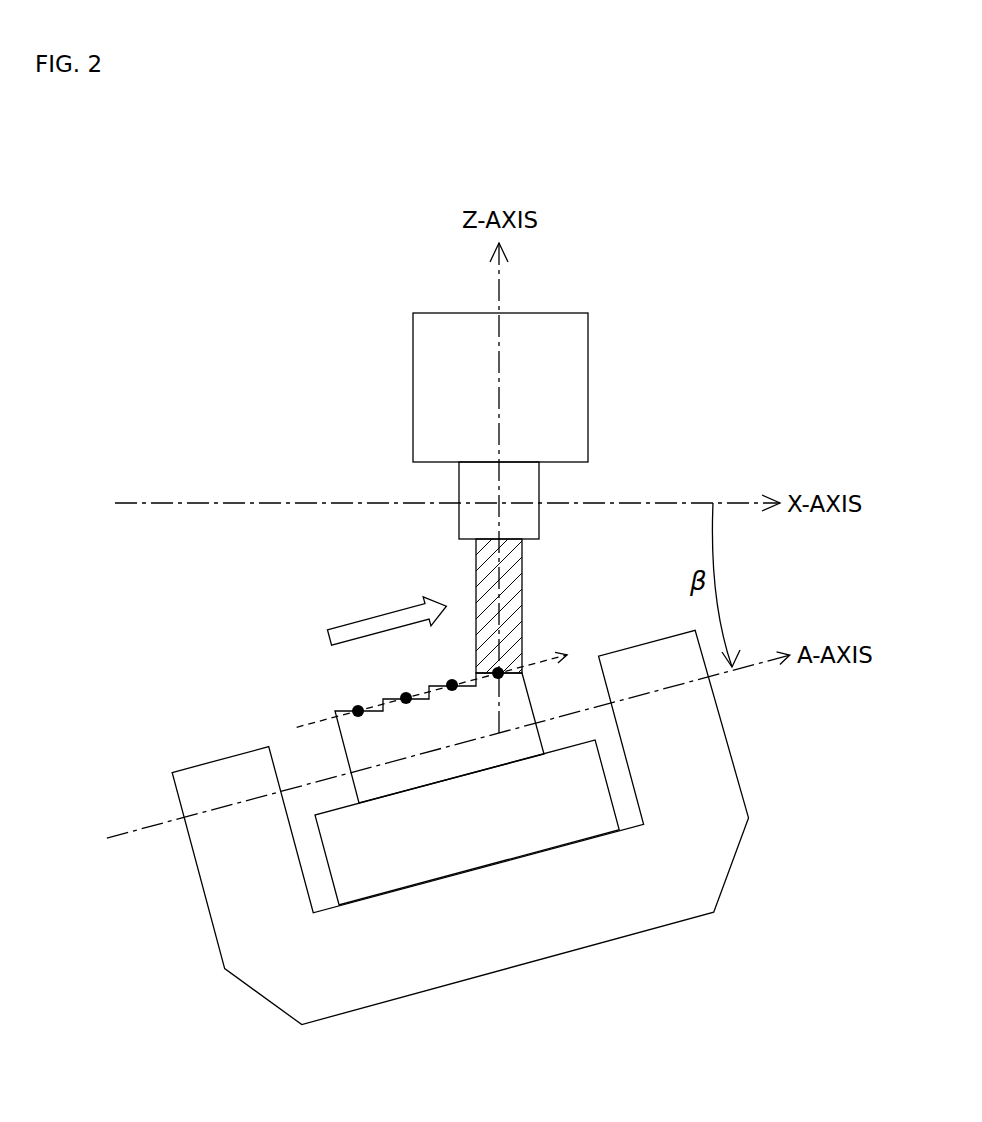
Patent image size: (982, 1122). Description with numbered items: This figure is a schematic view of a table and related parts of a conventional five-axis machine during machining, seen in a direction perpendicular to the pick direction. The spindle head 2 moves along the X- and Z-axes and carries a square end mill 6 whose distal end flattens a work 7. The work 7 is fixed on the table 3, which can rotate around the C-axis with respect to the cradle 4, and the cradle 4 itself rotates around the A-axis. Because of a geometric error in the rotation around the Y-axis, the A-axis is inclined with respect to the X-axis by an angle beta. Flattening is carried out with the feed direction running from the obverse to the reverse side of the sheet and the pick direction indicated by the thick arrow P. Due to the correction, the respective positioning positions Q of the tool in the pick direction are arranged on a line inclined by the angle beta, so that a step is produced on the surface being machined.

The spindle head 2 is at (572, 397).
The table 3 is at (479, 856).
The cradle 4 is at (725, 792).
The square end mill 6 is at (530, 523).
The work 7 is at (388, 782).
The pick direction arrow P is at (372, 615).
The positioning positions Q is at (402, 697).